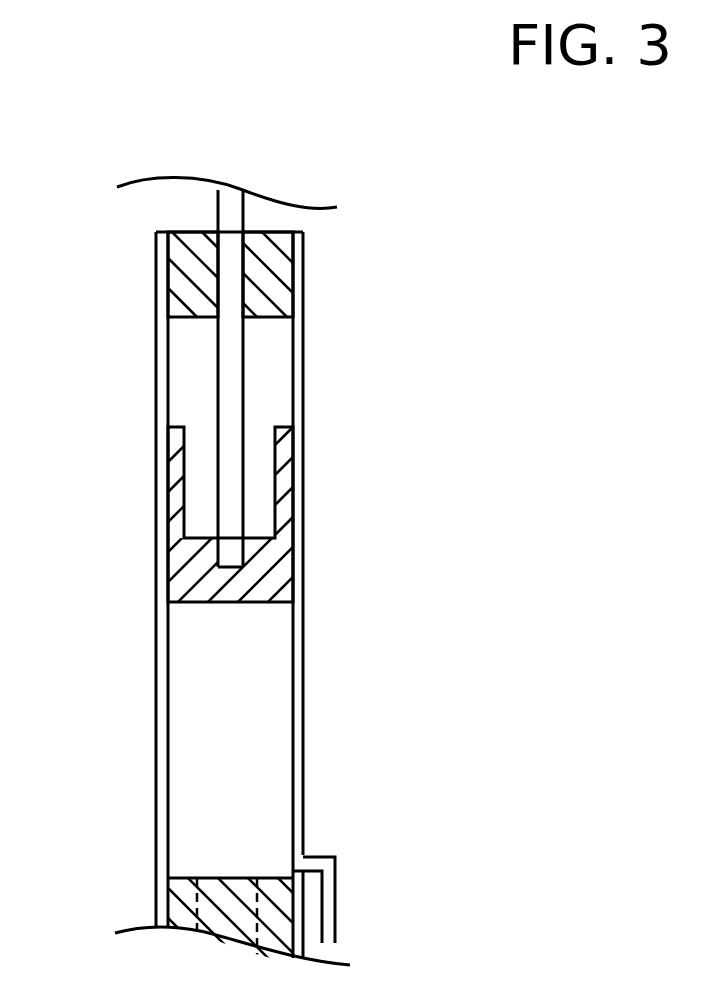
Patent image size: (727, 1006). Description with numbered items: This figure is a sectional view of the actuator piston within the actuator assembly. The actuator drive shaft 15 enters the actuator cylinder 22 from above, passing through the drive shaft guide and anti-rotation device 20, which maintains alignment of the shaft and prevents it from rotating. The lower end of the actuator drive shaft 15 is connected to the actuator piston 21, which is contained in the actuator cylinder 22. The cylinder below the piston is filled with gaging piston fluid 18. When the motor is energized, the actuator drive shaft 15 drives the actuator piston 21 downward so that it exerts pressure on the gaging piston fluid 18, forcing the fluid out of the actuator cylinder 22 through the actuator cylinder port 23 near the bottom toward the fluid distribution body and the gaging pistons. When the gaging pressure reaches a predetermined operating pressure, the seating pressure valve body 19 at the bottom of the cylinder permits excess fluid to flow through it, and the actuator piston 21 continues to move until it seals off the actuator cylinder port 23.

The actuator drive shaft 15 is at (219, 370).
The gaging piston fluid 18 is at (213, 727).
The seating pressure valve body 19 is at (190, 895).
The drive shaft guide and anti-rotation device 20 is at (271, 287).
The actuator piston 21 is at (297, 577).
The actuator cylinder 22 is at (305, 657).
The actuator cylinder port 23 is at (298, 862).